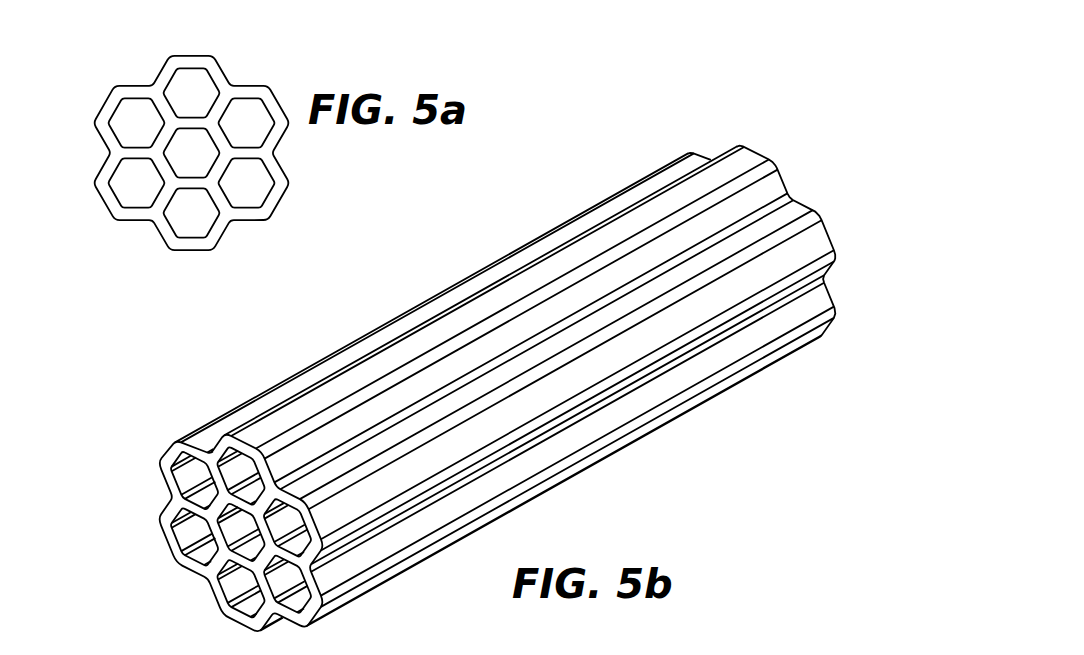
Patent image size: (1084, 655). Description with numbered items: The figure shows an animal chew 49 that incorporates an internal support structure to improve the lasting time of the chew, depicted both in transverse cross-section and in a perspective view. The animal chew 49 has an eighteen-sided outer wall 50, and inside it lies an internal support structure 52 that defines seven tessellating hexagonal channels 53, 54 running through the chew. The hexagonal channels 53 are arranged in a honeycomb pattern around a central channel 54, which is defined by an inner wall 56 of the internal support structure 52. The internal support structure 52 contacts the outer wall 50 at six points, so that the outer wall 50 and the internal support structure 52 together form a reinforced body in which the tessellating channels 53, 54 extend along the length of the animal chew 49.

In FIG. 5A, the animal chew 49 is at (126, 72).
In FIG. 5B, the animal chew 49 is at (677, 133).
In FIG. 5A, the outer wall 50 is at (214, 67).
In FIG. 5B, the outer wall 50 is at (547, 245).
In FIG. 5A, the internal support structure 52 is at (143, 155).
In FIG. 5B, the internal support structure 52 is at (218, 567).
In FIG. 5A, the hexagonal channel 53 is at (122, 190).
In FIG. 5A, the hexagonal channel 54 is at (192, 160).
In FIG. 5A, the inner wall 56 is at (222, 167).